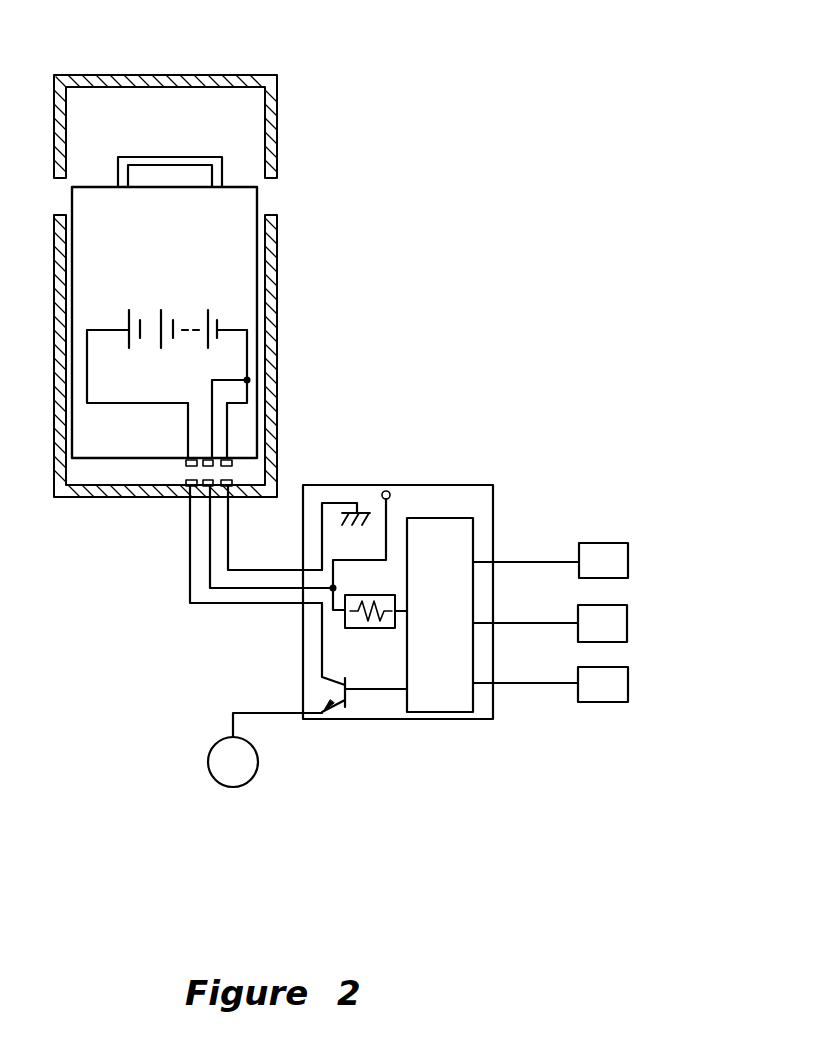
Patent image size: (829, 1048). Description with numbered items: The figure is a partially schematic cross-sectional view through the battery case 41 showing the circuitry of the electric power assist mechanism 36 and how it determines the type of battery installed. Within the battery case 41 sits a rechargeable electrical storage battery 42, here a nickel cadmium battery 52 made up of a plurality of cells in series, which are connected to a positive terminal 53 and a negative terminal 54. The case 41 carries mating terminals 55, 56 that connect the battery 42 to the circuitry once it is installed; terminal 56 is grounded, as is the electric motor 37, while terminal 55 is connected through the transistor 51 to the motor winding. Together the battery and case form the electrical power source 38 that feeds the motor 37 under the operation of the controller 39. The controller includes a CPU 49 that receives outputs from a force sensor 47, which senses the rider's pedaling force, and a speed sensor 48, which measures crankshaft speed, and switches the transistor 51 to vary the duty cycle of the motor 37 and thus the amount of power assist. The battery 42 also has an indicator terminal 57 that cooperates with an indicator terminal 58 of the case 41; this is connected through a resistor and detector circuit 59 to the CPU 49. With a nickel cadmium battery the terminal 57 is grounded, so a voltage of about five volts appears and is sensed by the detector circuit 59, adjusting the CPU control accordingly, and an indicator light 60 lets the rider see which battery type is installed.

The electric power assist mechanism 36 is at (396, 126).
The electric motor 37 is at (253, 780).
The electrical power source 38 is at (163, 636).
The controller 39 is at (456, 485).
The battery case 41 is at (277, 267).
The electrical storage battery 42 is at (235, 187).
The force sensor 47 is at (628, 622).
The speed sensor 48 is at (628, 688).
The CPU 49 is at (448, 705).
The transistor 51 is at (338, 741).
The nickel cadmium battery 52 is at (130, 318).
The positive terminal 53 is at (187, 457).
The negative terminal 54 is at (228, 462).
The mating terminal 55 is at (183, 478).
The mating terminal 56 is at (232, 483).
The indicator terminal 57 is at (207, 458).
The indicator terminal 58 is at (207, 480).
The resistor and detector circuit 59 is at (372, 630).
The indicator light 60 is at (607, 543).